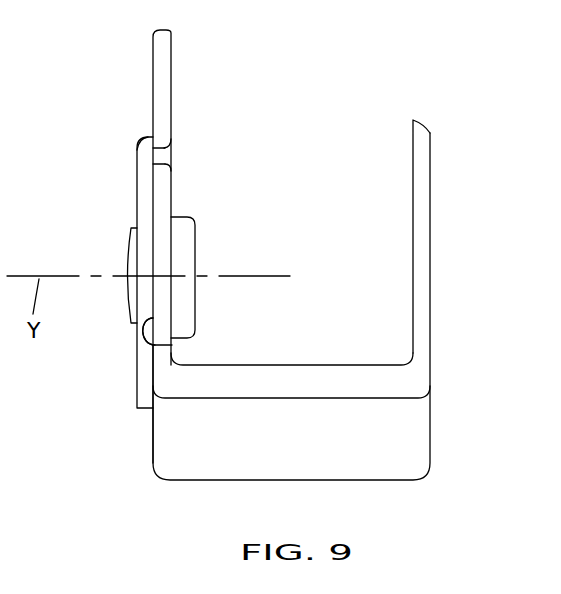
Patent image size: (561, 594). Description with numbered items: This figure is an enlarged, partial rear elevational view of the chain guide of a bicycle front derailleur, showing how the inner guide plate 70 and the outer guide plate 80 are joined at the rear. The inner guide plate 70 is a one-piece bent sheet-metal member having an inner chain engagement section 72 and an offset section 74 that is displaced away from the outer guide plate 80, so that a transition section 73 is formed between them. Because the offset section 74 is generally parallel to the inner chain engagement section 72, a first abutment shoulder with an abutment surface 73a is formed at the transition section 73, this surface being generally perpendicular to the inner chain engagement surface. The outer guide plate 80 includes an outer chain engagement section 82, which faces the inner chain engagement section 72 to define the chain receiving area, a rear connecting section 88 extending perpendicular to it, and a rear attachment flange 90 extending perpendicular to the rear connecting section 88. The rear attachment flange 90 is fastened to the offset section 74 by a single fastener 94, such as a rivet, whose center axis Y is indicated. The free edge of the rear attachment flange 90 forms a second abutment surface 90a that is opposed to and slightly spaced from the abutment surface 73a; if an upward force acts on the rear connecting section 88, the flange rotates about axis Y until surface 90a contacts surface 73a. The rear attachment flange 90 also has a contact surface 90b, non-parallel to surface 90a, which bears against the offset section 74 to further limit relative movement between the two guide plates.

The inner guide plate 70 is at (152, 49).
The inner chain engagement section 72 is at (163, 70).
The transition section 73 is at (152, 139).
The abutment surface 73a is at (171, 149).
The offset section 74 is at (146, 216).
The outer guide plate 80 is at (430, 215).
The outer chain engagement section 82 is at (420, 157).
The rear connecting section 88 is at (297, 386).
The rear attachment flange 90 is at (162, 204).
The abutment surface 90a is at (171, 164).
The contact surface 90b is at (155, 345).
The fastener 94 is at (183, 258).